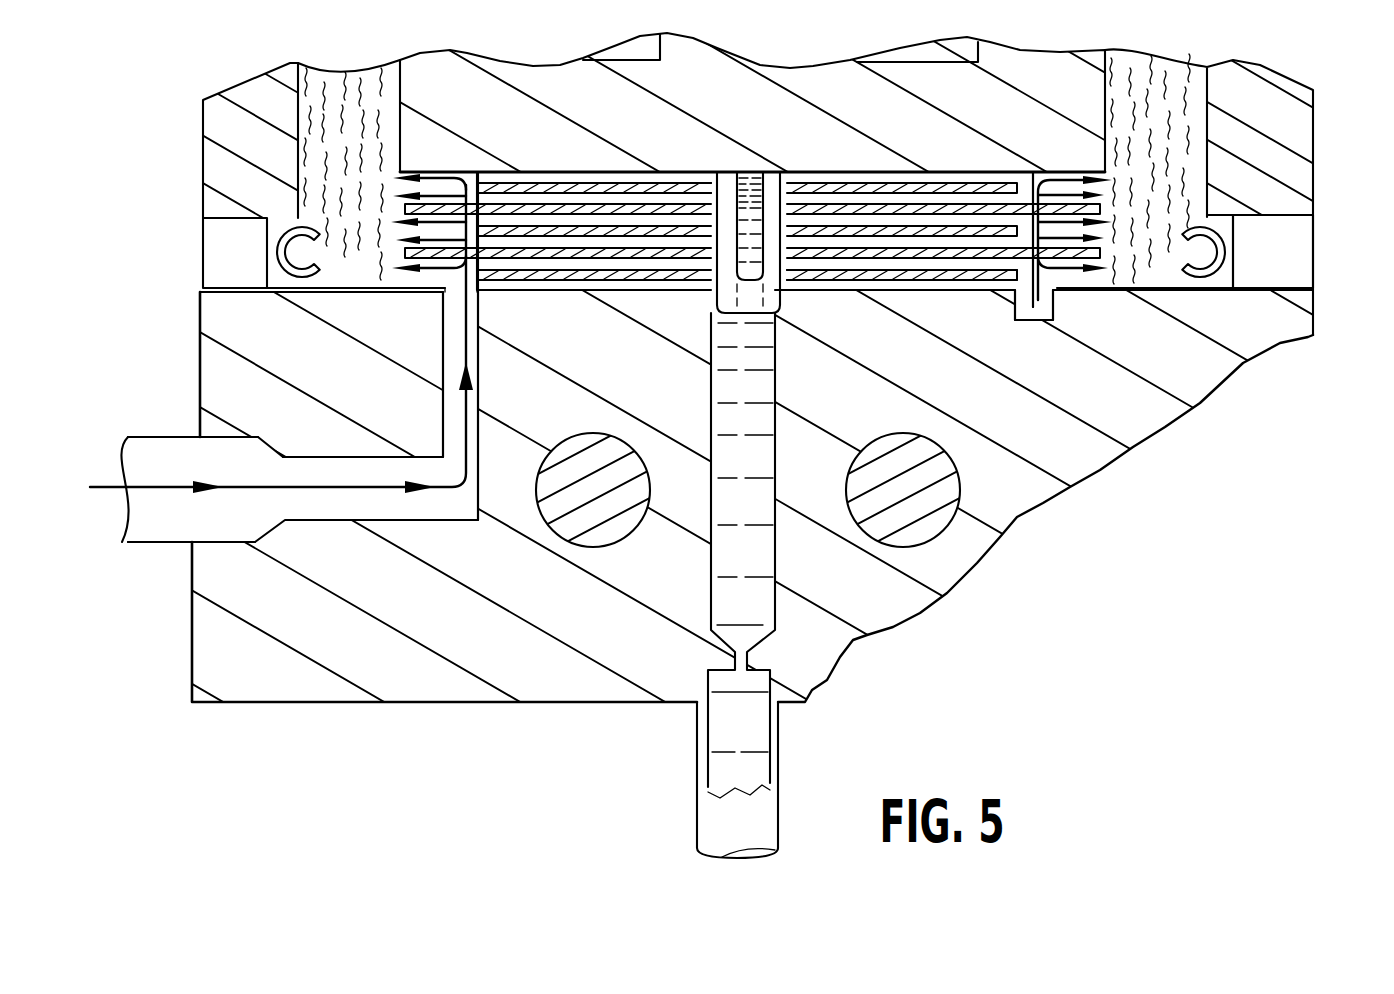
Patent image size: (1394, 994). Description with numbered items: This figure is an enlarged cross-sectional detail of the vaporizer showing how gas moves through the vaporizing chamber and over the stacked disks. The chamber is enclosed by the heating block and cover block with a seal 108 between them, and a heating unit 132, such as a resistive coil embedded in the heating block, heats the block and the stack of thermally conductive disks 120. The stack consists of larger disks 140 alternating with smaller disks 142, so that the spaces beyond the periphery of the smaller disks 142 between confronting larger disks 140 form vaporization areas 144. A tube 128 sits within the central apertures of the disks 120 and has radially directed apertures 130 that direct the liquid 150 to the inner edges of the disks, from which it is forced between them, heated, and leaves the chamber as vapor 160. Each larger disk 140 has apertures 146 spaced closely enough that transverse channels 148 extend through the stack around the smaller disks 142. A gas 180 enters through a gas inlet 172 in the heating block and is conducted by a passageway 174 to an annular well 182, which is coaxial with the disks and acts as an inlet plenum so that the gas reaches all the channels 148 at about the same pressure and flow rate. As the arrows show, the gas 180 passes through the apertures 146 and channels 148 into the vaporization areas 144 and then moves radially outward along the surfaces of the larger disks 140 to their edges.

The seal 108 is at (1295, 246).
The disks 120 is at (940, 287).
The tube 128 is at (716, 300).
The radially directed apertures 130 is at (777, 190).
The heating unit 132 is at (890, 447).
The larger disks 140 is at (593, 205).
The smaller disks 142 is at (533, 181).
The vaporization areas 144 is at (412, 287).
The apertures 146 is at (476, 208).
The channels 148 is at (1003, 168).
The liquid 150 is at (760, 388).
The vapor 160 is at (350, 85).
The gas inlet 172 is at (150, 532).
The passageway 174 is at (388, 452).
The gas 180 is at (450, 170).
The annular well 182 is at (473, 312).